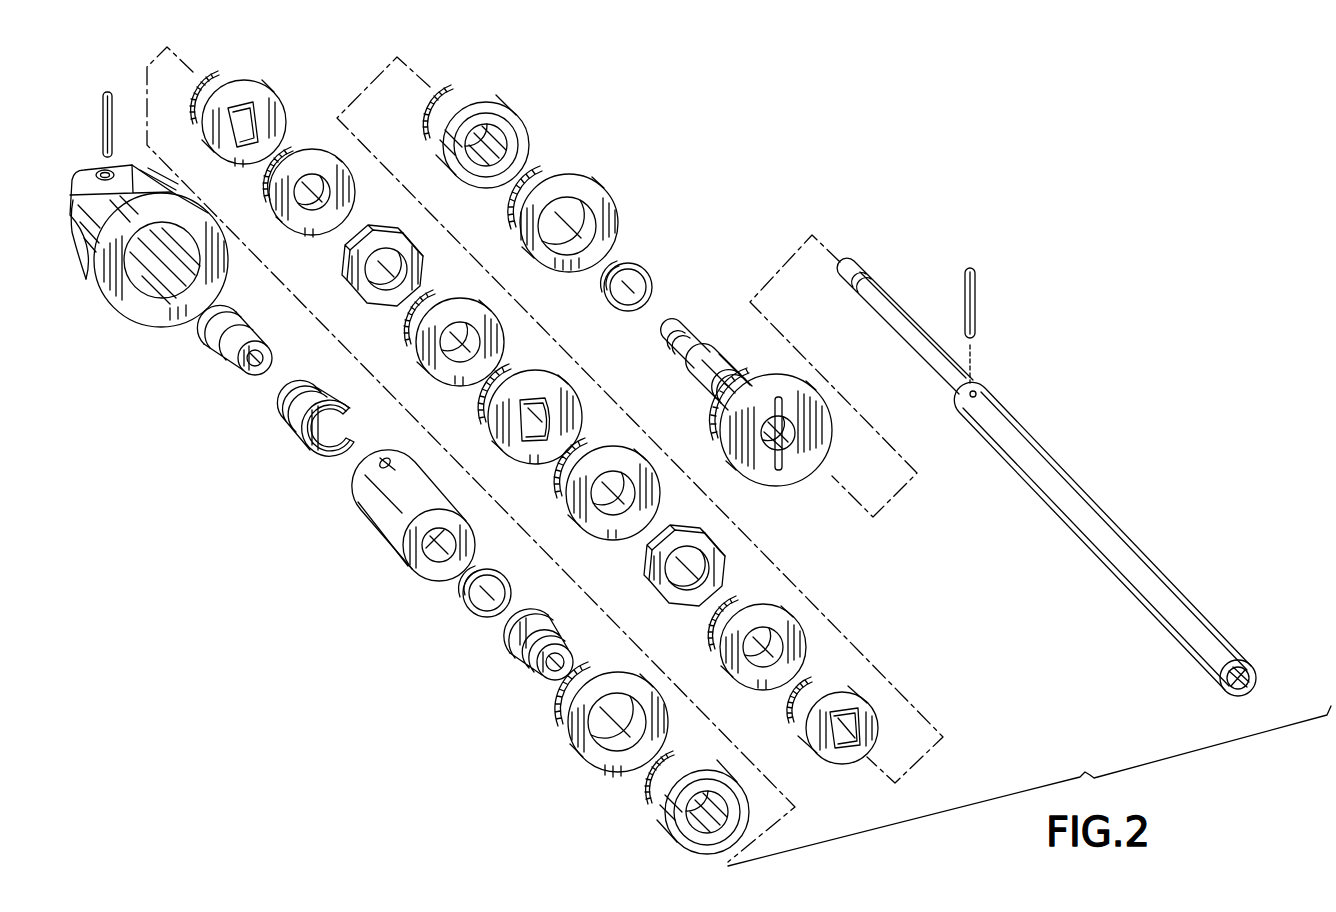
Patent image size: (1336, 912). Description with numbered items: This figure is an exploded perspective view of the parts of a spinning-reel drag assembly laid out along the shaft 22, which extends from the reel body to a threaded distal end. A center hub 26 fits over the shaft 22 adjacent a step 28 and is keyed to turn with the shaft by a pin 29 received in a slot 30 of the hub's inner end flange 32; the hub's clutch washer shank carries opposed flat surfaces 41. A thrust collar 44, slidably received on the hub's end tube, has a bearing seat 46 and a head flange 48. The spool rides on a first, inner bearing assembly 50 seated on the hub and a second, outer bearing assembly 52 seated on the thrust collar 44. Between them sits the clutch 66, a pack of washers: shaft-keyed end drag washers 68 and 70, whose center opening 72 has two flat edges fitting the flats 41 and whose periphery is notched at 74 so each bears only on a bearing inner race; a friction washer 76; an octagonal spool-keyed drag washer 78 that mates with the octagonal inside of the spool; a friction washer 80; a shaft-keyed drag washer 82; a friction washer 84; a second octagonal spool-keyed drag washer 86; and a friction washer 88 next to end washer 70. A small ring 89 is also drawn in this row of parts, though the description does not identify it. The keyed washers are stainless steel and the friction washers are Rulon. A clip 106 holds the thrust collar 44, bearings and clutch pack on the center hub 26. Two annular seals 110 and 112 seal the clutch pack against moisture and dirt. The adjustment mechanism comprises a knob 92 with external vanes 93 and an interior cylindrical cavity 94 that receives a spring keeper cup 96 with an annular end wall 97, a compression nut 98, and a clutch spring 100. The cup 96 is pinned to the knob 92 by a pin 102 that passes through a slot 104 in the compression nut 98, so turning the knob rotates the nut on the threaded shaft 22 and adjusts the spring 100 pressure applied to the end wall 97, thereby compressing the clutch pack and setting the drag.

The shaft 22 is at (892, 300).
The center hub 26 is at (793, 426).
The step 28 is at (973, 385).
The pin 29 is at (974, 290).
The slot 30 is at (779, 466).
The inner end flange 32 is at (827, 432).
The opposed flat surfaces 41 is at (727, 352).
The thrust collar 44 is at (510, 645).
The bearing seat 46 is at (506, 656).
The head flange 48 is at (540, 622).
The first, inner bearing assembly 50 is at (470, 86).
The second, outer bearing assembly 52 is at (660, 815).
The clutch 66 is at (253, 99).
The shaft-keyed end drag washer 68 is at (828, 746).
The shaft-keyed end drag washer 70 is at (268, 44).
The center opening 72 is at (860, 748).
The peripheral notch 74 is at (790, 705).
The friction washer 76 is at (775, 608).
The octagonal spool-keyed drag washer 78 is at (705, 538).
The friction washer 80 is at (632, 458).
The shaft-keyed drag washer 82 is at (550, 382).
The friction washer 84 is at (470, 304).
The octagonal spool-keyed drag washer 86 is at (402, 242).
The friction washer 88 is at (347, 147).
The O-ring 89 is at (648, 274).
The knob 92 is at (143, 245).
The vanes 93 is at (76, 237).
The cylindrical cavity 94 is at (166, 298).
The spring keeper cup 96 is at (399, 543).
The annular end wall 97 is at (432, 578).
The compression nut 98 is at (227, 348).
The clutch spring 100 is at (296, 418).
The pin 102 is at (112, 92).
The slot 104 is at (222, 318).
The clip 106 is at (478, 612).
The annular seal 110 is at (604, 192).
The annular seal 112 is at (578, 745).